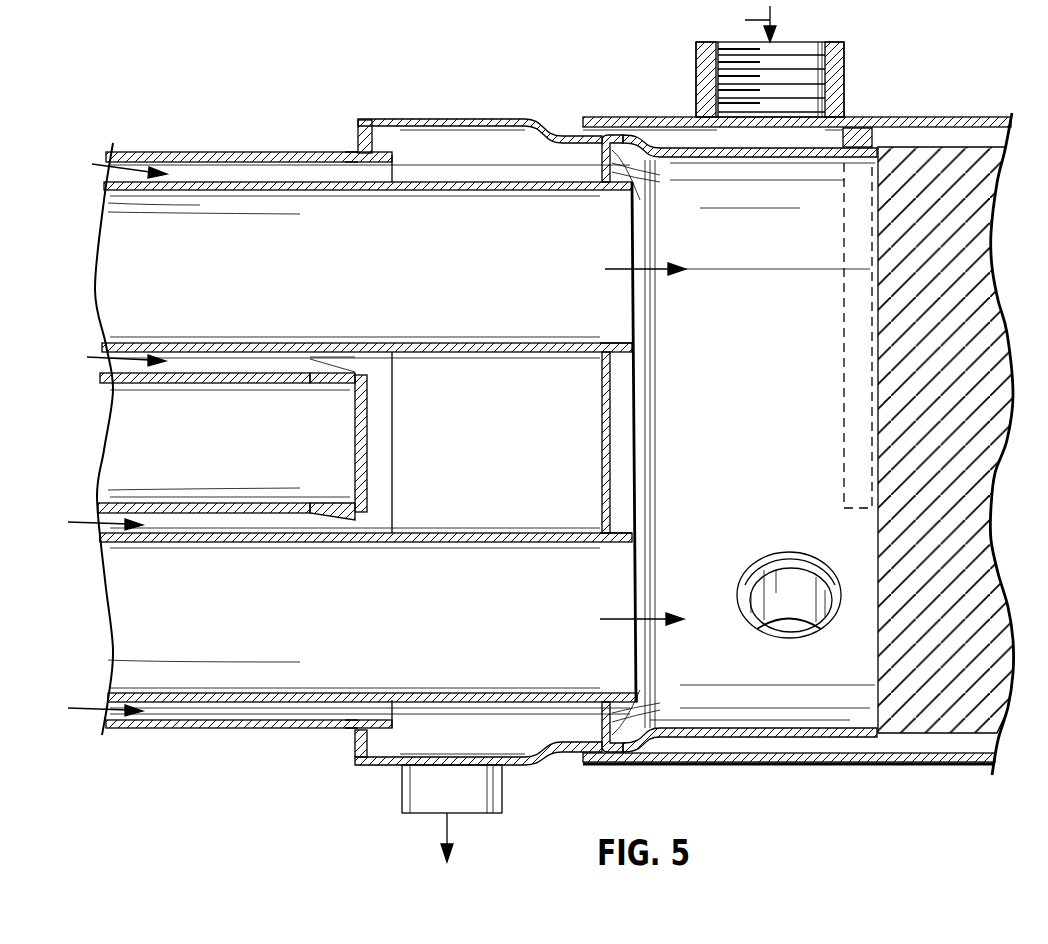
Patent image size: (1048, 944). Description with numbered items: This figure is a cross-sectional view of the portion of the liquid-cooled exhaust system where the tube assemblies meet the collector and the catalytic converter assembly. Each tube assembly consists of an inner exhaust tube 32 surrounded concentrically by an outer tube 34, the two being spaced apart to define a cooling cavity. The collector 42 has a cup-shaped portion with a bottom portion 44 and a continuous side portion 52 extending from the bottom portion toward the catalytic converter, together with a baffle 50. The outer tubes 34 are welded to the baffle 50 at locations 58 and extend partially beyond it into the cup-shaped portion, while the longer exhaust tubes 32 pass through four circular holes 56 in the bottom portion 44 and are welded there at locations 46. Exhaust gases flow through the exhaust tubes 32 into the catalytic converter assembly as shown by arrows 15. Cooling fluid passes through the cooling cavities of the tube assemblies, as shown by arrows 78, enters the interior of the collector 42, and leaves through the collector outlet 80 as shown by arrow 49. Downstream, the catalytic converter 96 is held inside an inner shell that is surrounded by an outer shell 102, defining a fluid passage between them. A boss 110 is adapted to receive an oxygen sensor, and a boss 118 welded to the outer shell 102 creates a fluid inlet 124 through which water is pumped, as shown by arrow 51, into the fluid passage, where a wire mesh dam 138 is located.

The arrows 15 is at (642, 268).
The exhaust tube 32 is at (420, 342).
The outer tube 34 is at (222, 152).
The collector 42 is at (516, 114).
The bottom portion 44 is at (610, 410).
The locations 46 is at (600, 182).
The arrow 49 is at (452, 825).
The baffle 50 is at (356, 148).
The arrow 51 is at (744, 23).
The side portion 52 is at (478, 118).
The circular holes 56 is at (640, 200).
The locations 58 is at (348, 157).
The arrows 78 is at (128, 170).
The collector outlet 80 is at (503, 783).
The catalytic converter 96 is at (975, 233).
The outer shell 102 is at (945, 117).
The boss 110 is at (770, 588).
The boss 118 is at (843, 88).
The fluid inlet 124 is at (784, 58).
The wire mesh dam 138 is at (844, 328).